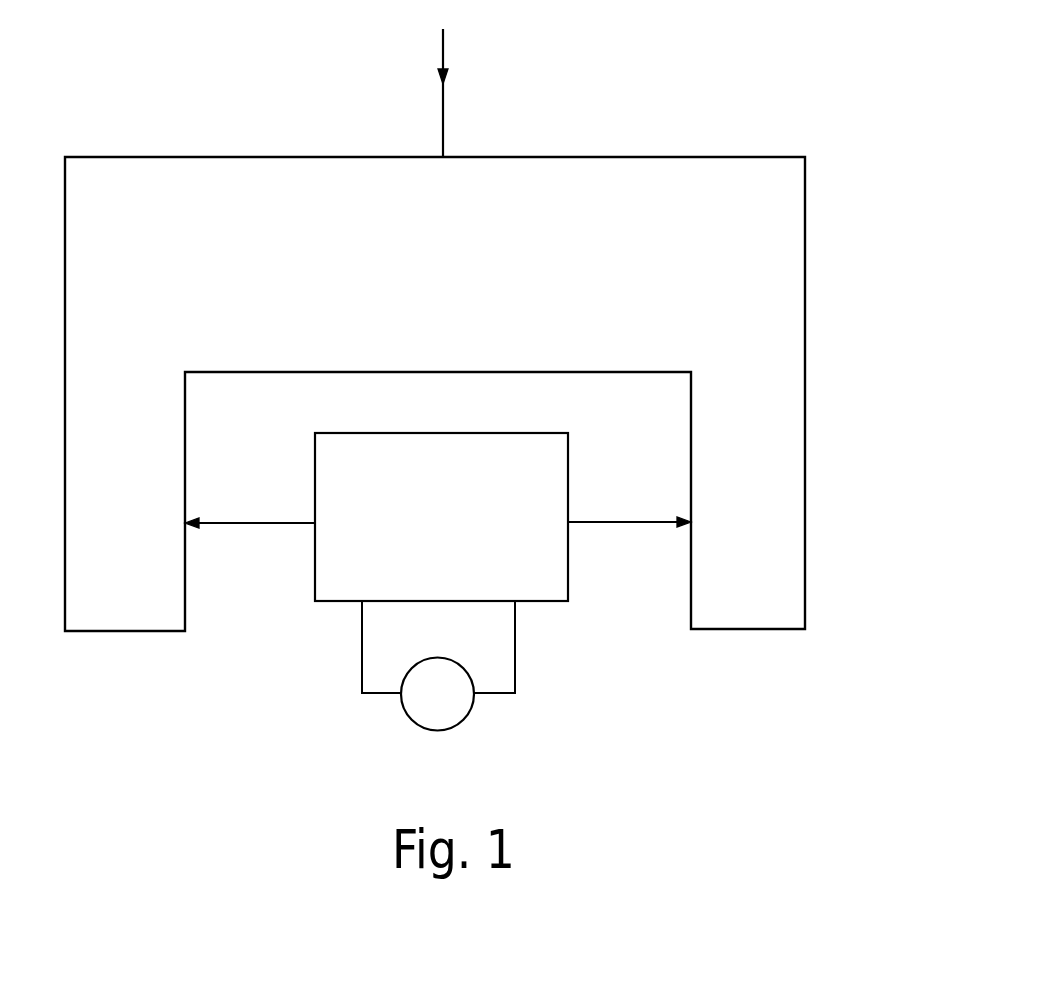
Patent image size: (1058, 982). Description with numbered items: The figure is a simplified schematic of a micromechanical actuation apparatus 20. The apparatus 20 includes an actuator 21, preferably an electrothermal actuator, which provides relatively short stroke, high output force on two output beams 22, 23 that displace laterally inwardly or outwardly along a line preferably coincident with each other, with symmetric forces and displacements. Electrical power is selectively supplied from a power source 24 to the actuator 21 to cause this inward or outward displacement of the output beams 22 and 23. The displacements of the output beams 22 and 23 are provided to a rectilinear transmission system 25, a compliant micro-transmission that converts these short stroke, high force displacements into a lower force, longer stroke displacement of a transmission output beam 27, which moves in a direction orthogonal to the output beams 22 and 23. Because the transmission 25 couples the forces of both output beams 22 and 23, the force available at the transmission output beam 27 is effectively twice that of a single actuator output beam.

The micromechanical actuation apparatus 20 is at (702, 131).
The actuator 21 is at (568, 475).
The output beam 22 is at (612, 523).
The output beam 23 is at (257, 524).
The power source 24 is at (458, 725).
The rectilinear transmission system 25 is at (805, 405).
The transmission output beam 27 is at (443, 113).